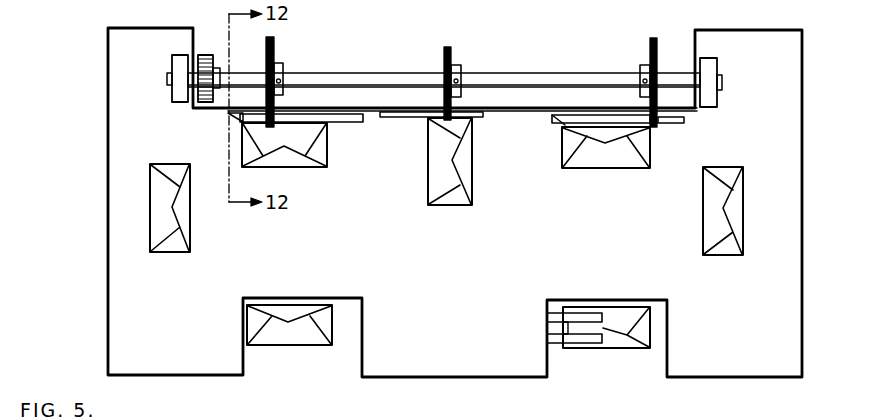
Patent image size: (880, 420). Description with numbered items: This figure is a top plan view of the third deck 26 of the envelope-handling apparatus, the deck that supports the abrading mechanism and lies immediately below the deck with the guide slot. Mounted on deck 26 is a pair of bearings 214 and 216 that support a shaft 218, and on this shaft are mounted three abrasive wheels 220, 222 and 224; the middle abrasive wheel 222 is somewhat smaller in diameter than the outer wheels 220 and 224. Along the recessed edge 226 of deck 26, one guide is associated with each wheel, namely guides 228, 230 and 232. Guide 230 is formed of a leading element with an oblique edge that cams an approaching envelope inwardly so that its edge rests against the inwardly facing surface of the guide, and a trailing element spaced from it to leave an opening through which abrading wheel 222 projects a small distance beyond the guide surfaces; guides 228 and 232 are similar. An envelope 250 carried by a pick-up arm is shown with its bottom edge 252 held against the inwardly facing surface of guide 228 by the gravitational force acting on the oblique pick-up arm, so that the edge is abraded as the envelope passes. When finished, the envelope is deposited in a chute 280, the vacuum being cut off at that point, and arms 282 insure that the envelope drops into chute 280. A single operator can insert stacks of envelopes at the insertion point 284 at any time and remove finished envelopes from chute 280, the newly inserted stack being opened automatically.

The third deck 26 is at (808, 113).
The bearing 214 is at (177, 62).
The bearing 216 is at (710, 67).
The shaft 218 is at (532, 76).
The abrasive wheel 220 is at (275, 43).
The abrasive wheel 222 is at (449, 47).
The abrasive wheel 224 is at (655, 38).
The recessed edge 226 is at (382, 111).
The guide 228 is at (348, 122).
The guide 230 is at (485, 118).
The guide 232 is at (675, 124).
The envelope 250 is at (307, 167).
The bottom edge 252 is at (240, 119).
The chute 280 is at (667, 367).
The arms 282 is at (580, 316).
The insertion point 284 is at (358, 366).